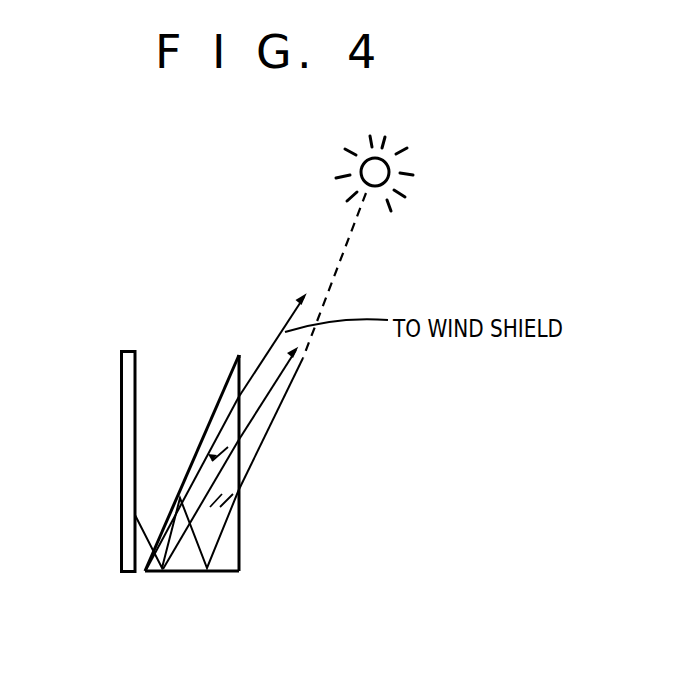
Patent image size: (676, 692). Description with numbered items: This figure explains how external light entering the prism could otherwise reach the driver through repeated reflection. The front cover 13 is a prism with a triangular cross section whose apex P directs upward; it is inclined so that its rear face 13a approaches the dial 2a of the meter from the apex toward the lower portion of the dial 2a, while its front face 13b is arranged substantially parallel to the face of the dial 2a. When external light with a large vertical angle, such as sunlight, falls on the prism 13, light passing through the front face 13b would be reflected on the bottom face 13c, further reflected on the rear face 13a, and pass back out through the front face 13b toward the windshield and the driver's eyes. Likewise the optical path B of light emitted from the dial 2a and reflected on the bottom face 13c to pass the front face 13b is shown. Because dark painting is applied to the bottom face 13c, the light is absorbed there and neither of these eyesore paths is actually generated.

The dial 2a is at (118, 375).
The front cover 13 is at (240, 497).
The rear face 13a is at (167, 520).
The front face 13b is at (240, 560).
The bottom face 13c is at (213, 573).
The apex of prism P is at (240, 356).
The optical path B is at (270, 393).